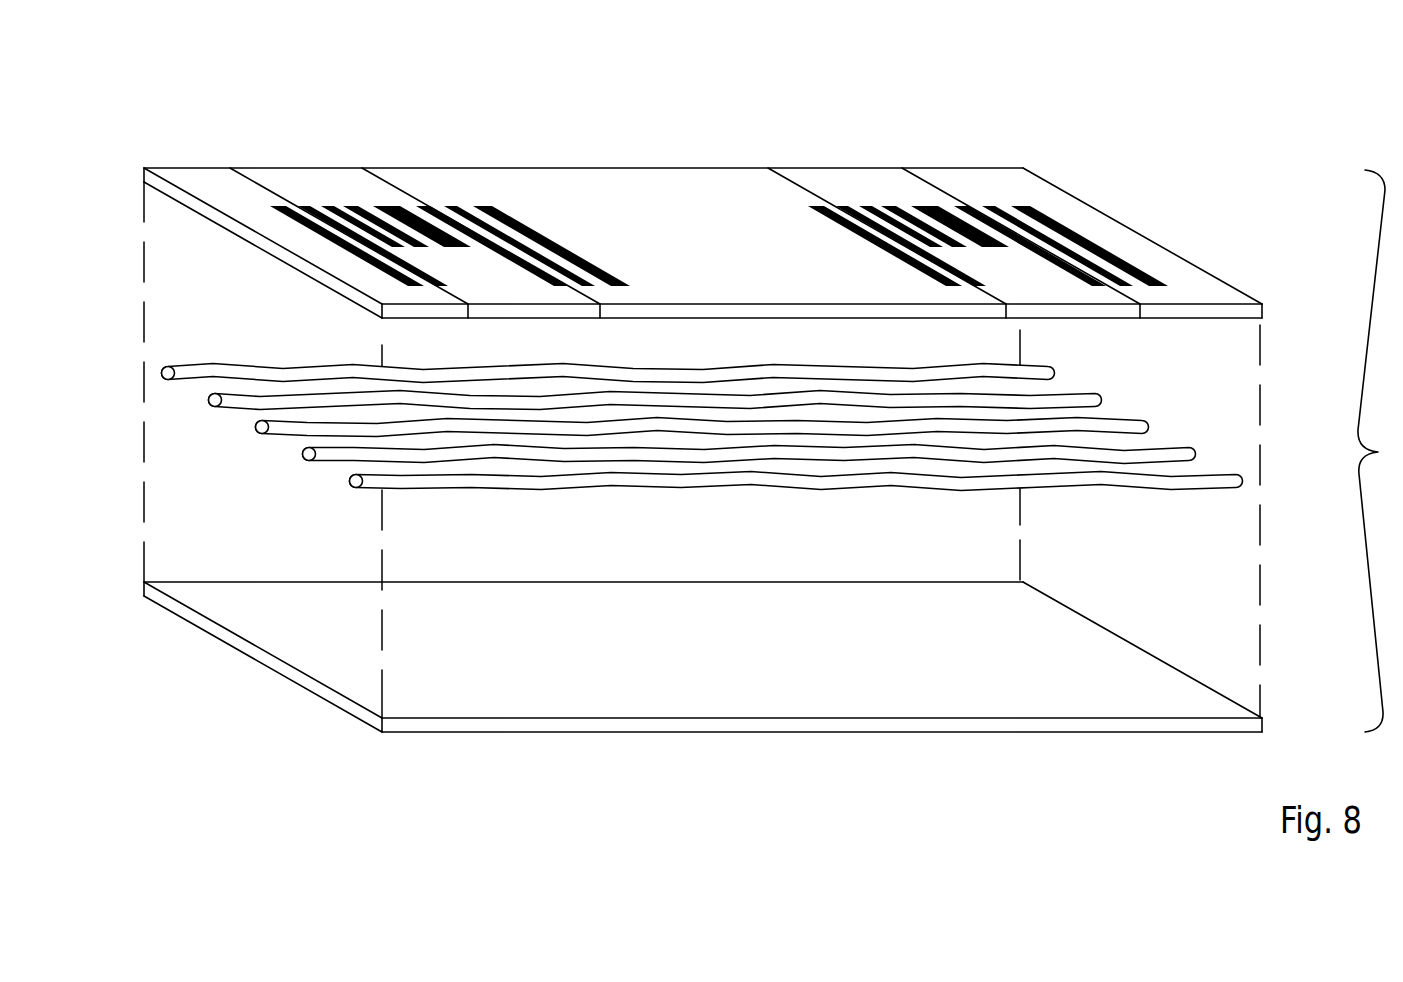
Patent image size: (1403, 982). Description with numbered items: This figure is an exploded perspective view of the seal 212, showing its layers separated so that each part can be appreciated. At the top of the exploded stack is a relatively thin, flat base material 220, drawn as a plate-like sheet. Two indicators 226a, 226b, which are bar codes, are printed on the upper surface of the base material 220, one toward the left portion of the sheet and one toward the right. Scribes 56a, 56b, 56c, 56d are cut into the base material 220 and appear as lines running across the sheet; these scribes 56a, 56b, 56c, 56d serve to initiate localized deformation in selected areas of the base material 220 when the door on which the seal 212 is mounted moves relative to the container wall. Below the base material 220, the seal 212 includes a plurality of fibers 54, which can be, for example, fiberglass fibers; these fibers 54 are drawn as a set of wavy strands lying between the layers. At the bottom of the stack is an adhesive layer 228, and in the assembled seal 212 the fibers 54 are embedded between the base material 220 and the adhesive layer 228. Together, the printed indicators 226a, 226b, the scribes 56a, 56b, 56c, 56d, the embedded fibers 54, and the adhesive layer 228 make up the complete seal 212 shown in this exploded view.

The seal 212 is at (210, 119).
The base material 220 is at (599, 168).
The scribe 56a is at (800, 190).
The scribe 56b is at (942, 190).
The scribe 56c is at (383, 178).
The scribe 56d is at (232, 169).
The indicator 226a is at (1050, 218).
The indicator 226b is at (513, 218).
The fibers 54 is at (1207, 490).
The adhesive layer 228 is at (433, 733).